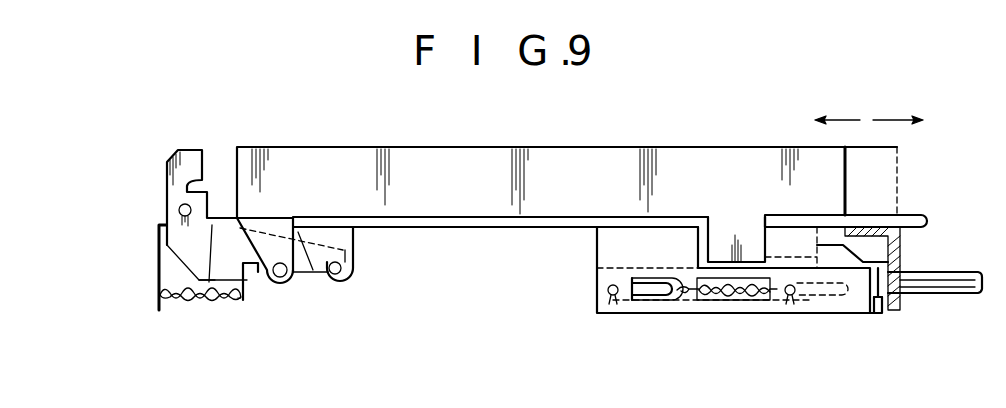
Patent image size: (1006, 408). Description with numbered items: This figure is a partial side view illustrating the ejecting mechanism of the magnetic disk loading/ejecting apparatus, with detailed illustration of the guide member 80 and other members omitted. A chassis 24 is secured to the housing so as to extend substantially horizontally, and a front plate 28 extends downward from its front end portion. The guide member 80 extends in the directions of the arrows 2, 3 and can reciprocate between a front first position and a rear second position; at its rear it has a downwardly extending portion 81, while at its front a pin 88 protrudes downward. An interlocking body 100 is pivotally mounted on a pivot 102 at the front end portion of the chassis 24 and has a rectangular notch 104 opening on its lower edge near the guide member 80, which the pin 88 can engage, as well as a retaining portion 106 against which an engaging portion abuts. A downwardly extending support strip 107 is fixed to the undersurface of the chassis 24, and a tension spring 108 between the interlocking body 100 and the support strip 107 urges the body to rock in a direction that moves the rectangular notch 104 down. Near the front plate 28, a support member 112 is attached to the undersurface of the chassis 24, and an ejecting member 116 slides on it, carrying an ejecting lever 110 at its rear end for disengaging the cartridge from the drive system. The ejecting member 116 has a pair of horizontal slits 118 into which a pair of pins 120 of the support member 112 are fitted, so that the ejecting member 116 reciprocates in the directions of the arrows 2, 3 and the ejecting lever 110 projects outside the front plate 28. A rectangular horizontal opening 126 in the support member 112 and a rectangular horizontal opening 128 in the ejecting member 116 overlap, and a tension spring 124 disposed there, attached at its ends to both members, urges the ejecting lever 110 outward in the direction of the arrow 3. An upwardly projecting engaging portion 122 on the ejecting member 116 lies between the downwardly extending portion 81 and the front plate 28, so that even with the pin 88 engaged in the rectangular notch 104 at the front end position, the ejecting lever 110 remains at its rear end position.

The arrow 2 is at (845, 120).
The arrow 3 is at (888, 120).
The chassis 24 is at (908, 214).
The front plate 28 is at (901, 231).
The guide member 80 is at (413, 218).
The downwardly extending portion 81 is at (735, 242).
The pin 88 is at (286, 276).
The interlocking body 100 is at (346, 313).
The pivot 102 is at (179, 207).
The rectangular notch 104 is at (255, 280).
The retaining portion 106 is at (200, 160).
The downwardly extending support strip 107 is at (157, 262).
The tension spring 108 is at (202, 304).
The ejecting lever 110 is at (965, 272).
The support member 112 is at (847, 304).
The ejecting member 116 is at (886, 304).
The horizontal slits 118 is at (645, 278).
The pins 120 is at (607, 291).
The upwardly projecting engaging portion 122 is at (826, 259).
The tension spring 124 is at (725, 300).
The rectangular horizontal opening 126 is at (679, 297).
The rectangular horizontal opening 128 is at (692, 296).